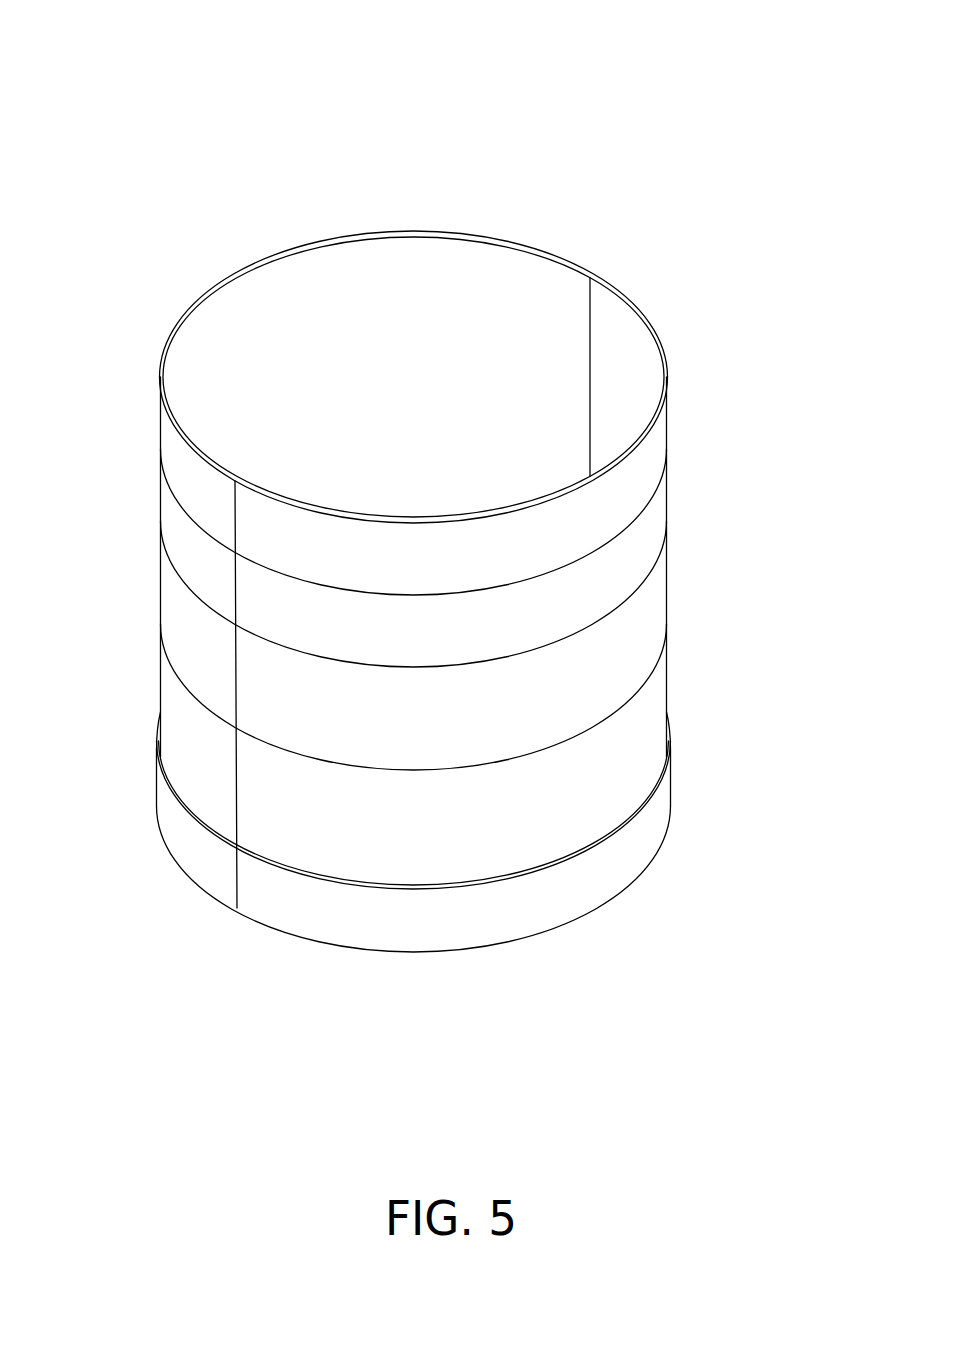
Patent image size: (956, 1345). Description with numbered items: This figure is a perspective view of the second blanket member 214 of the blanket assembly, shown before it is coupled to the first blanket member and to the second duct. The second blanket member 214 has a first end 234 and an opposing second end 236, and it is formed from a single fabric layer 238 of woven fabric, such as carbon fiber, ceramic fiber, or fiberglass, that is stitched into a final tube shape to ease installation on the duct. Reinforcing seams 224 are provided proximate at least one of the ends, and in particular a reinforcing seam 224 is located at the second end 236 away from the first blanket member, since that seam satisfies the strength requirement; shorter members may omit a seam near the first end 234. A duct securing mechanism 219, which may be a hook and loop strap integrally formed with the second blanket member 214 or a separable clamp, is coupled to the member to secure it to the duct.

The second blanket member 214 is at (354, 114).
The second end 236 is at (547, 196).
The reinforcing seam 224 is at (158, 450).
The duct securing mechanism 219 is at (490, 683).
The fabric layer 238 is at (565, 810).
The first end 234 is at (258, 992).